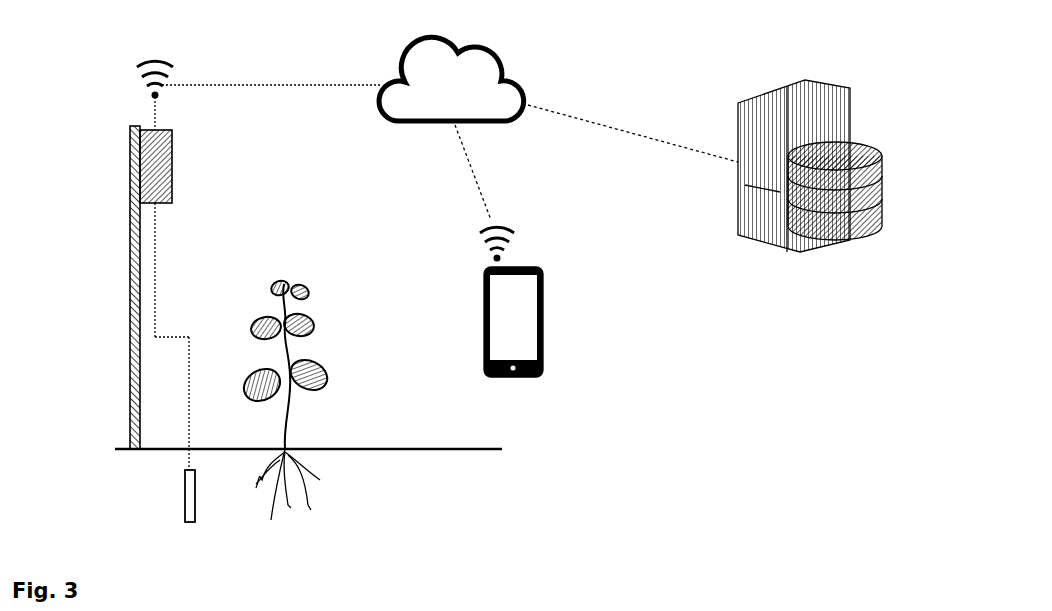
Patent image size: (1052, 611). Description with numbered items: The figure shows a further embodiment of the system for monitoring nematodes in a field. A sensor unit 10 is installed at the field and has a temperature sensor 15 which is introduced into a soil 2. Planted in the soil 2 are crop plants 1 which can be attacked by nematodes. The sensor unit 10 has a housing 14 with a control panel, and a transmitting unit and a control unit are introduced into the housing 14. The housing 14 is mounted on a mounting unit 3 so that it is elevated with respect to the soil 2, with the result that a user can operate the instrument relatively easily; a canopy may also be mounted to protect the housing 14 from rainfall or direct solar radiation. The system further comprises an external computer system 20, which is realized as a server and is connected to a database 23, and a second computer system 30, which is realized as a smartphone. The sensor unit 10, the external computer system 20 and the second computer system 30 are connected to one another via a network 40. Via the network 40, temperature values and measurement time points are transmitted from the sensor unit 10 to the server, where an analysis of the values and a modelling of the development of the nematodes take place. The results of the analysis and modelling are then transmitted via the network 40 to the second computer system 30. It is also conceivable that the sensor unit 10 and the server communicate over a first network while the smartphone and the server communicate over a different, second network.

The crop plants 1 is at (311, 322).
The soil 2 is at (371, 461).
The mounting unit 3 is at (127, 221).
The sensor unit 10 is at (244, 292).
The housing 14 is at (175, 187).
The temperature sensor 15 is at (183, 498).
The external computer system 20 is at (829, 189).
The database 23 is at (849, 234).
The second computer system 30 is at (530, 322).
The network 40 is at (478, 74).